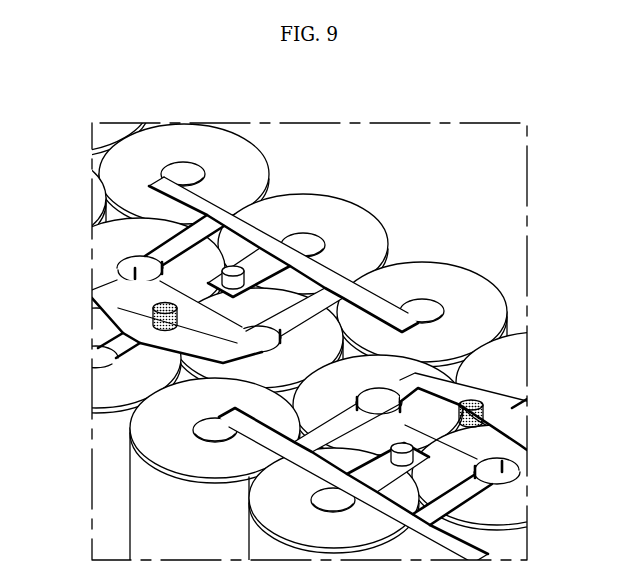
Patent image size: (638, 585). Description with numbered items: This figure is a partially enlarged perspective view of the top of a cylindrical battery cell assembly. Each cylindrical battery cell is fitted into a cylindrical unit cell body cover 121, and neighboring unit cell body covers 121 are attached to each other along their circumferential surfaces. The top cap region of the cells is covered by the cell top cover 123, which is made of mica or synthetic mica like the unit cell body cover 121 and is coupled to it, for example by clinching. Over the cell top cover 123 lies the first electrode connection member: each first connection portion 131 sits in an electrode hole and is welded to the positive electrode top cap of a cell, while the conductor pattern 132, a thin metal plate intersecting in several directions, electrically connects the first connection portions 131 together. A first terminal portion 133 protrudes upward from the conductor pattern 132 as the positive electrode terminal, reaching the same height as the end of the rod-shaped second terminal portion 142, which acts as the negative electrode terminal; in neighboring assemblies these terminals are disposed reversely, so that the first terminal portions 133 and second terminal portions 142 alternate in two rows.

The unit cell body cover 121 is at (155, 513).
The cell top cover 123 is at (155, 438).
The first connection portion 131 is at (188, 172).
The conductor pattern 132 is at (335, 284).
The first terminal portion 133 is at (235, 268).
The second terminal portion 142 is at (153, 306).